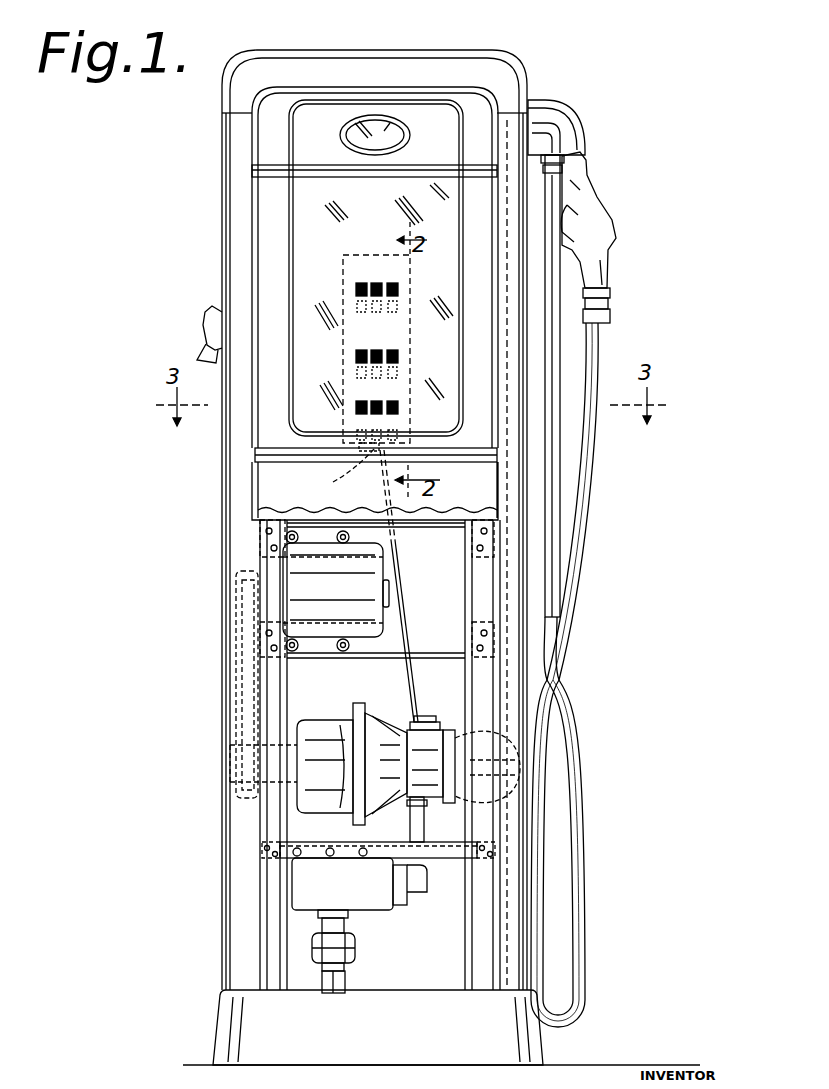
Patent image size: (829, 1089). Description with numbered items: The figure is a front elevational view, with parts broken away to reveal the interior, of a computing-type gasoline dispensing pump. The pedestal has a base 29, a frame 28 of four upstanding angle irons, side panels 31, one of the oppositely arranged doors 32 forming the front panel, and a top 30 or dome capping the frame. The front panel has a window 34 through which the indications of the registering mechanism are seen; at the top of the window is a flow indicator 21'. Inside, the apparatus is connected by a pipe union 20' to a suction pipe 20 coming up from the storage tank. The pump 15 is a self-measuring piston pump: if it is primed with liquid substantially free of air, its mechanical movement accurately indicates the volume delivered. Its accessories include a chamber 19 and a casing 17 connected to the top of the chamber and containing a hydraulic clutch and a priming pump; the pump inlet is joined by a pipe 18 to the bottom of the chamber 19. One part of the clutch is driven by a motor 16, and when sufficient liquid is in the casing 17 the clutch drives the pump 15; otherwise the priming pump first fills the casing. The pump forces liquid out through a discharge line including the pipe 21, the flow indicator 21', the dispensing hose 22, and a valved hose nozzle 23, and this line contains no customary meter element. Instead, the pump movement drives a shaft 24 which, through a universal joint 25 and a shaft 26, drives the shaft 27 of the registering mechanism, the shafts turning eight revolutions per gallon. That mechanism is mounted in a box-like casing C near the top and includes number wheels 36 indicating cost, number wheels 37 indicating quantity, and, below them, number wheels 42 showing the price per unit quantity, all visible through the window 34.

The pump 15 is at (448, 750).
The motor 16 is at (345, 588).
The casing 17 is at (318, 722).
The pipe 18 is at (425, 830).
The chamber 19 is at (360, 885).
The suction pipe 20 is at (365, 978).
The pipe union 20' is at (359, 940).
The pipe 21 is at (576, 542).
The flow indicator 21' is at (375, 89).
The dispensing hose 22 is at (553, 580).
The valved hose nozzle 23 is at (587, 208).
The shaft 24 is at (400, 730).
The universal joint 25 is at (378, 453).
The shaft 26 is at (400, 590).
The shaft 27 is at (338, 470).
The frame 28 is at (485, 915).
The base 29 is at (413, 1034).
The top 30 is at (473, 44).
The side panels 31 is at (240, 240).
The door 32 is at (283, 483).
The window 34 is at (318, 202).
The number wheels 36 is at (400, 302).
The number wheels 37 is at (356, 368).
The number wheels 42 is at (404, 402).
The casing C is at (404, 356).